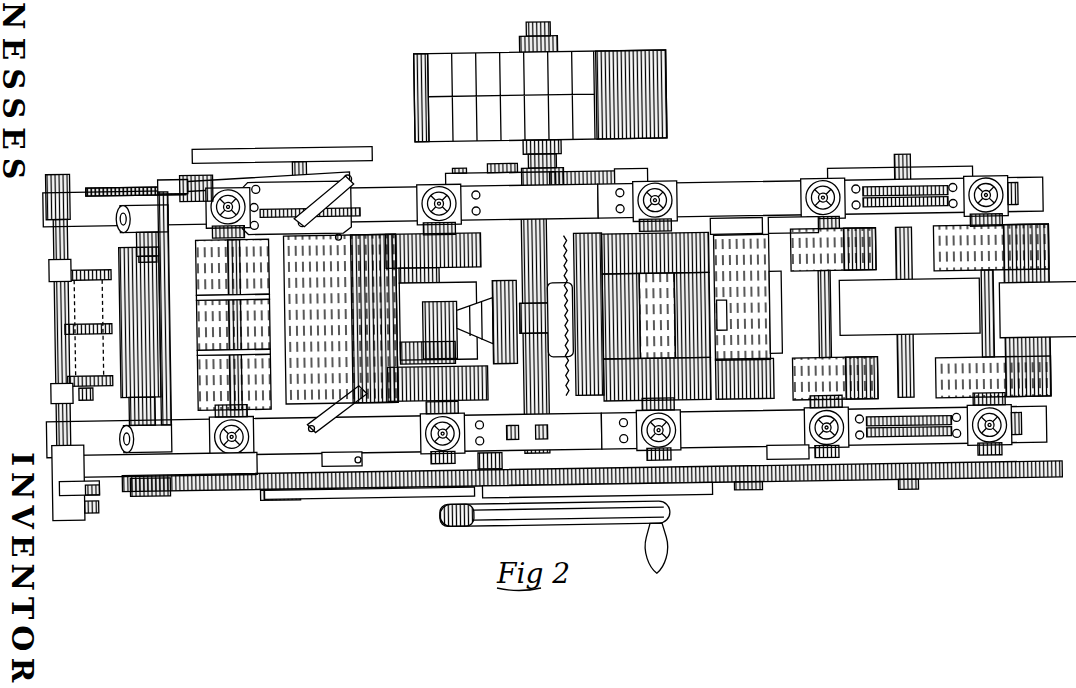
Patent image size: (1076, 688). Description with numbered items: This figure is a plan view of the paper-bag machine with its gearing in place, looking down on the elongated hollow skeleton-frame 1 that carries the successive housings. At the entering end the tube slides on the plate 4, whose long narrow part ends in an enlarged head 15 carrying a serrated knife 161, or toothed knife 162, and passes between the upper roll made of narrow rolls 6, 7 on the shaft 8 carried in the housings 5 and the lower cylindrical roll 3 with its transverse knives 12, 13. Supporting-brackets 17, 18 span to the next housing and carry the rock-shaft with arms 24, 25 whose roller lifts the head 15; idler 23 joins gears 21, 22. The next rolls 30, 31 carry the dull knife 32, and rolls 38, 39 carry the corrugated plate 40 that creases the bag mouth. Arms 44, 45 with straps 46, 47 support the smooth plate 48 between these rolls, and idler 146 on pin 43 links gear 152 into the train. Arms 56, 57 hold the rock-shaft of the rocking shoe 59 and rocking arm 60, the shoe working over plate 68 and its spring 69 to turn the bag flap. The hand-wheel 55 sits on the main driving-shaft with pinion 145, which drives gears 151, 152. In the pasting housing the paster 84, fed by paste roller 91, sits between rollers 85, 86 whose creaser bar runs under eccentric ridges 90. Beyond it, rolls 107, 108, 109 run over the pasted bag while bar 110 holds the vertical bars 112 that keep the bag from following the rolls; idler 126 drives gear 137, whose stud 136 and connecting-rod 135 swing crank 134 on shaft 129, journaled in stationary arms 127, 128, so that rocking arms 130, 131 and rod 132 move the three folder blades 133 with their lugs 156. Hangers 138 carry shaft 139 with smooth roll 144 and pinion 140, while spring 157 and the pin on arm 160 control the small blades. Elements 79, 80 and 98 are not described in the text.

The skeleton-frame 1 is at (1045, 280).
The roll 3 is at (1046, 348).
The plate 4 is at (1037, 310).
The housings 5 is at (998, 315).
The narrow roll 6 is at (993, 377).
The narrow roll 7 is at (991, 247).
The shaft 8 is at (999, 495).
The knife 12 is at (1064, 375).
The knife 13 is at (1030, 310).
The enlarged head 15 is at (909, 306).
The supporting-bracket 17 is at (935, 468).
The supporting-bracket 18 is at (900, 162).
The gear 21 is at (1042, 493).
The gear 22 is at (867, 493).
The idler 23 is at (905, 492).
The arm 24 is at (899, 312).
The arm 25 is at (897, 354).
The roll 30 is at (835, 378).
The roll 31 is at (833, 249).
The knife 32 is at (774, 341).
The narrow roll 38 is at (657, 379).
The narrow roll 39 is at (656, 295).
The plate 40 is at (719, 316).
The pin 43 is at (770, 507).
The arm 44 is at (820, 197).
The arm 45 is at (824, 427).
The supporting-strap 46 is at (736, 227).
The supporting-strap 47 is at (793, 227).
The plate 48 is at (744, 378).
The hand-wheel 55 is at (555, 539).
The arm 56 is at (320, 205).
The arm 57 is at (324, 435).
The rocking shoe 59 is at (546, 319).
The rocking arm 60 is at (542, 237).
The plate 68 is at (586, 385).
The spring 69 is at (583, 314).
The bearing 79 is at (467, 462).
The bracket 80 is at (546, 177).
The paster 84 is at (427, 352).
The roller 85 is at (438, 384).
The roller 86 is at (433, 250).
The projecting ridges 90 is at (436, 222).
The roller 91 is at (340, 319).
The clamp 98 is at (526, 435).
The roll 107 is at (233, 267).
The roll 108 is at (233, 324).
The roll 109 is at (234, 382).
The bar 110 is at (197, 456).
The vertical bars 112 is at (233, 324).
The idler 126 is at (369, 502).
The stationary arm 127 is at (68, 197).
The stationary arm 128 is at (155, 481).
The shaft 129 is at (78, 364).
The rocking arm 130 is at (40, 269).
The rocking arm 131 is at (46, 393).
The rod 132 is at (92, 306).
The folder blades 133 is at (103, 264).
The crank 134 is at (72, 506).
The connecting-rod 135 is at (592, 494).
The stud 136 is at (280, 511).
The gear 137 is at (264, 478).
The hangers 138 is at (144, 329).
The shaft 139 is at (138, 236).
The pinion 140 is at (130, 488).
The roll 144 is at (140, 336).
The pinion 145 is at (597, 492).
The idler 146 is at (763, 487).
The gear 151 is at (403, 501).
The gear 152 is at (703, 492).
The lugs 156 is at (88, 386).
The spring 157 is at (130, 181).
The rocking arm 160 is at (188, 176).
The pin 161 is at (184, 179).
The knife 162 is at (832, 344).